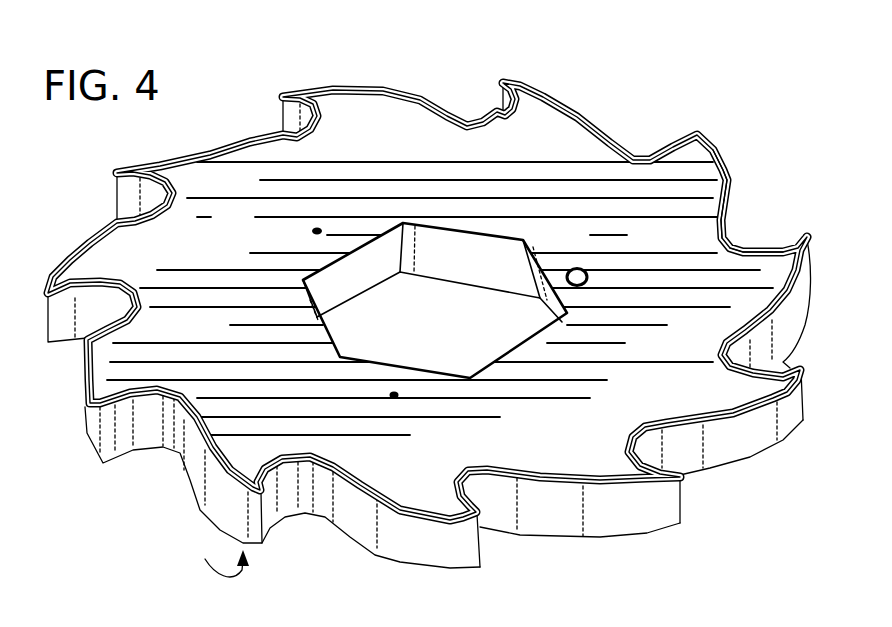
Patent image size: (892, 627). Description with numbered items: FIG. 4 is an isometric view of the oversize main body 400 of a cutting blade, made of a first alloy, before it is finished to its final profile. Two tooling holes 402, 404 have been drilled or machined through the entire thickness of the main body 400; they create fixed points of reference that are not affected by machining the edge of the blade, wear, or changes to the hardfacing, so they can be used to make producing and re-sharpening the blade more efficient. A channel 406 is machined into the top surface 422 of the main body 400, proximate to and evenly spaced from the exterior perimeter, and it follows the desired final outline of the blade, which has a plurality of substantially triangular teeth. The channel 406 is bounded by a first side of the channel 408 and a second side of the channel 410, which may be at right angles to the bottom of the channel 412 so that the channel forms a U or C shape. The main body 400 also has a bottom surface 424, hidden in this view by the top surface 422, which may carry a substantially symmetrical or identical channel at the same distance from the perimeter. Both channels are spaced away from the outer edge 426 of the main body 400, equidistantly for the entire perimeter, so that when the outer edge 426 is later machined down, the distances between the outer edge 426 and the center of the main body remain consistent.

The oversize main body 400 is at (555, 144).
The tooling hole 402 is at (314, 230).
The tooling hole 404 is at (397, 398).
The channel 406 is at (735, 184).
The first side of the channel 408 is at (768, 249).
The second side of the channel 410 is at (718, 231).
The bottom of the channel 412 is at (806, 236).
The top surface 422 is at (363, 118).
The bottom surface 424 is at (214, 556).
The outer edge 426 is at (448, 557).